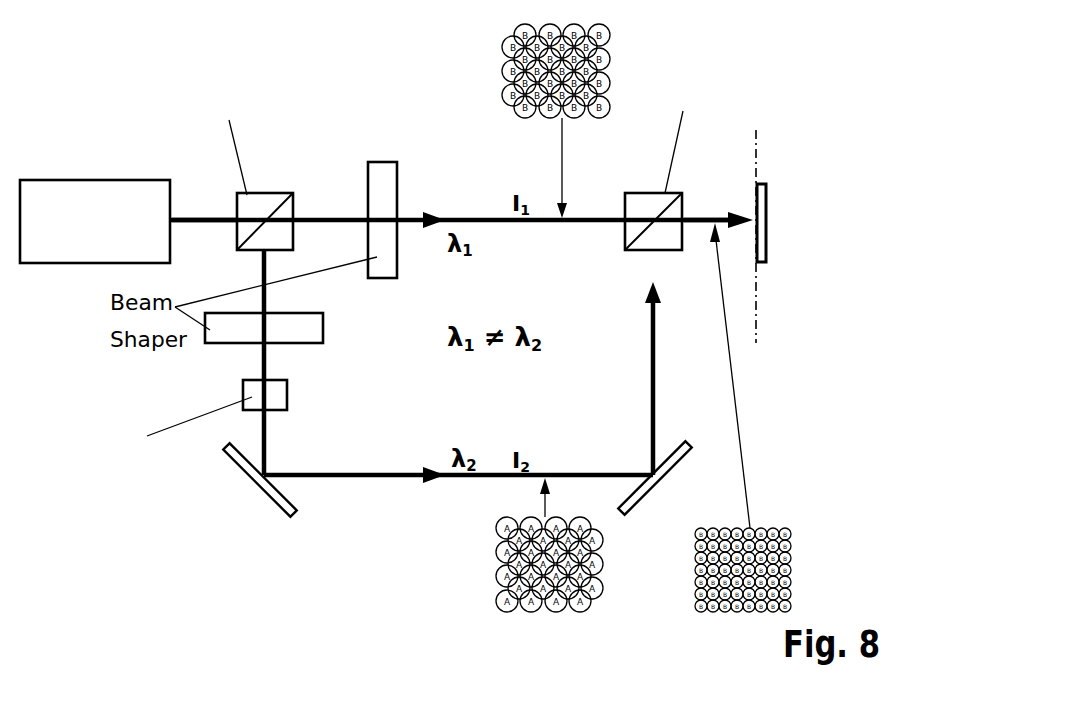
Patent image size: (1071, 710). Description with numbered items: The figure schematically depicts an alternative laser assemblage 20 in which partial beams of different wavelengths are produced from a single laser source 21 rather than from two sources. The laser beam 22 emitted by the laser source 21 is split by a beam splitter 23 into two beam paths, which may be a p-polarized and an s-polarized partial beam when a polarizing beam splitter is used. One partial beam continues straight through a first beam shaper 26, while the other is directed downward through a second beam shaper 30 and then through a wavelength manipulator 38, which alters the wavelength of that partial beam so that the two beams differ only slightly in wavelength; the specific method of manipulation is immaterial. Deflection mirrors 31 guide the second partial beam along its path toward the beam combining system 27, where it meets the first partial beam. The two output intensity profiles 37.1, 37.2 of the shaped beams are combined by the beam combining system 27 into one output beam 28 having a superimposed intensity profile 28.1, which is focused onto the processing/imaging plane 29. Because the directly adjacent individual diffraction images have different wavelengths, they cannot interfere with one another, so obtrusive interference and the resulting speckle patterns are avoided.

The laser assemblage 20 is at (794, 120).
The laser source 21 is at (66, 180).
The laser beam 22 is at (205, 218).
The beam splitter 23 is at (266, 193).
The first beam shaper 26 is at (383, 162).
The beam combining system 27 is at (654, 193).
The output beam 28 is at (706, 218).
The superimposed intensity profile 28.1 is at (770, 528).
The processing/imaging plane 29 is at (757, 265).
The second beam shaper 30 is at (323, 328).
The deflection mirror 31 is at (249, 478).
The output intensity profile 37.1 is at (503, 42).
The output intensity profile 37.2 is at (498, 572).
The wavelength manipulator 38 is at (287, 398).